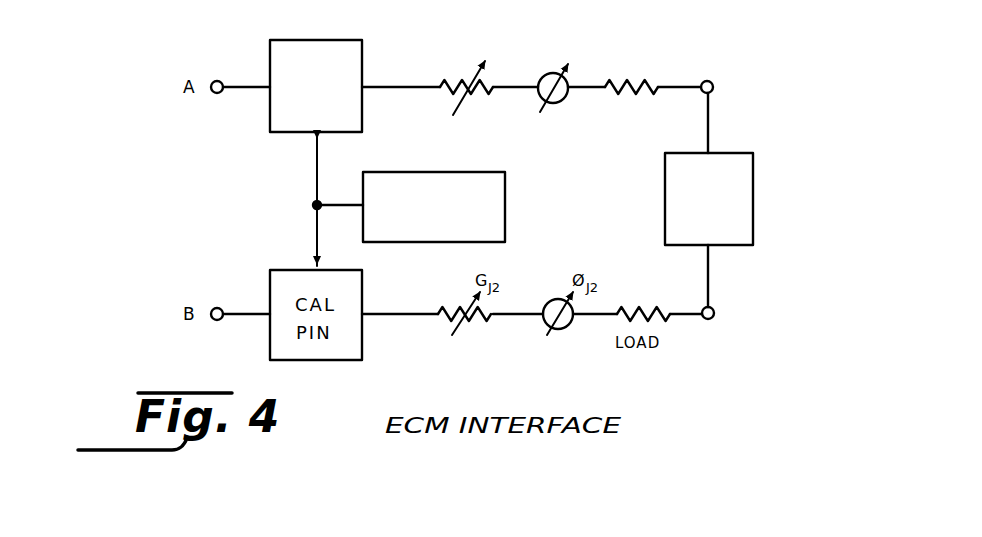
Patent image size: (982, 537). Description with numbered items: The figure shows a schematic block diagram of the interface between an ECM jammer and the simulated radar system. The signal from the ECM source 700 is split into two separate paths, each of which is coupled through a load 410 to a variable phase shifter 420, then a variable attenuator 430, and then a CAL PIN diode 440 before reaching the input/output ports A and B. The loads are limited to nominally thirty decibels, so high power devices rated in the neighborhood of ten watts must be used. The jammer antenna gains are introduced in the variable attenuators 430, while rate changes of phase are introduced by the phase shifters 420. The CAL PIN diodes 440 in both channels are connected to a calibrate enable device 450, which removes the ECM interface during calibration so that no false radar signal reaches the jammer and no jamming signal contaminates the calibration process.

The load 410 is at (650, 80).
The variable phase shifter 420 is at (552, 72).
The variable attenuator 430 is at (457, 77).
The CAL PIN diode 440 is at (313, 40).
The calibrate enable device 450 is at (498, 172).
The ECM source 700 is at (755, 168).